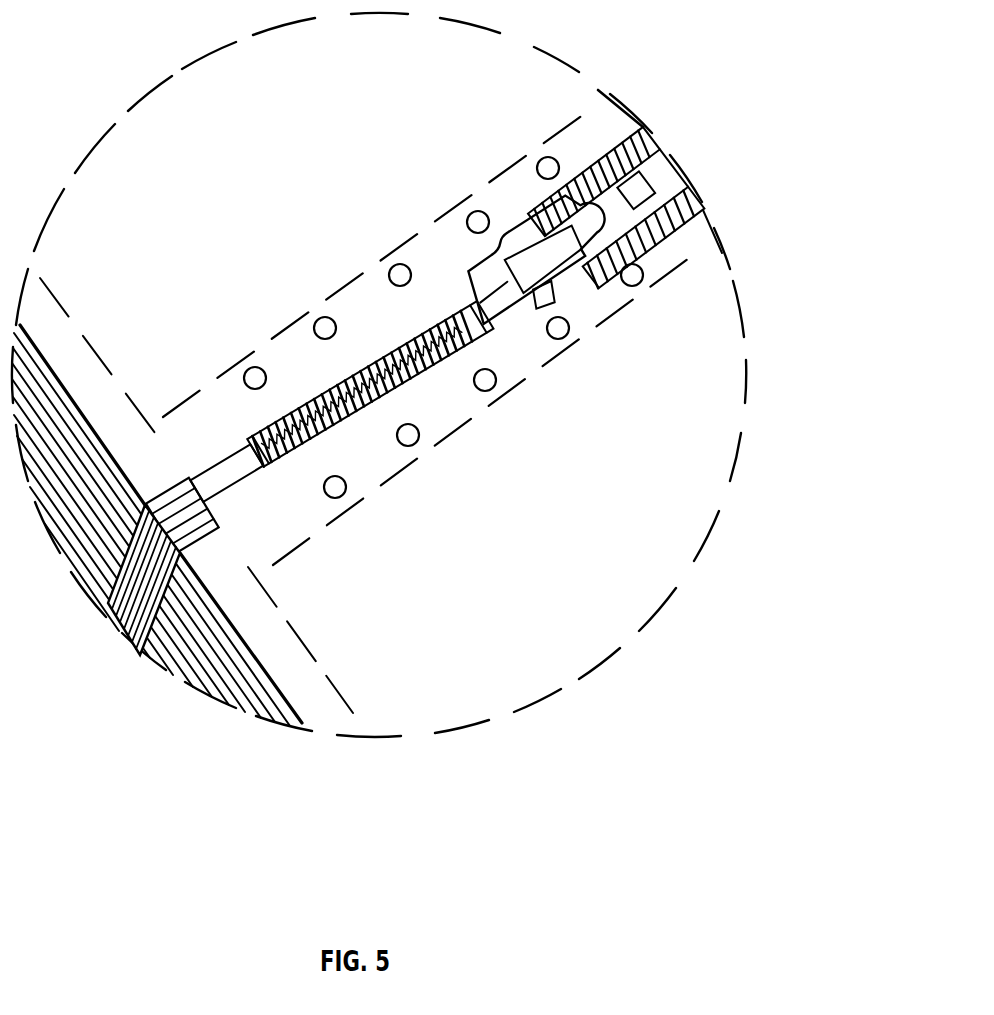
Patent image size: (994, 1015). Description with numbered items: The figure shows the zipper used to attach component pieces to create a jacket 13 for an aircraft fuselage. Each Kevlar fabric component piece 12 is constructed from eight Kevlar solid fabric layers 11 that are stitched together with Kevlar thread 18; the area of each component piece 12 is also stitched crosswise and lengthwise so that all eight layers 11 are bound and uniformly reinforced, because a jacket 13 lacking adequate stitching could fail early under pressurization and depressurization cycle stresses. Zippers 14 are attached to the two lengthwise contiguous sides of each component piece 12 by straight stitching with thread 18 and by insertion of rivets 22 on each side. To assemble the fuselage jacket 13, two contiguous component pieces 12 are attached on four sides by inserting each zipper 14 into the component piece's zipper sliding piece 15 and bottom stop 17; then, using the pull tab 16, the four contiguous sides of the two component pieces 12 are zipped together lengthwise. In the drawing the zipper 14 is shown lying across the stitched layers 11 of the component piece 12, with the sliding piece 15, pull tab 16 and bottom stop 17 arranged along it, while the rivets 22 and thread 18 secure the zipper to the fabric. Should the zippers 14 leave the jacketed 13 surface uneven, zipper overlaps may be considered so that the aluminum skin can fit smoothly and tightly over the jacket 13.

The Kevlar solid fabric layers 11 is at (222, 640).
The component piece 12 is at (290, 222).
The jacket 13 is at (582, 78).
The zipper 14 is at (455, 352).
The zipper sliding piece 15 is at (556, 290).
The pull tab 16 is at (664, 172).
The bottom stop 17 is at (215, 532).
The Kevlar thread 18 is at (445, 432).
The rivets 22 is at (336, 488).